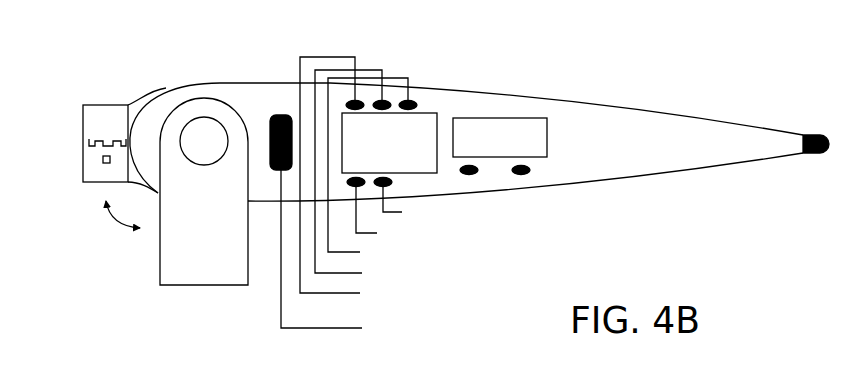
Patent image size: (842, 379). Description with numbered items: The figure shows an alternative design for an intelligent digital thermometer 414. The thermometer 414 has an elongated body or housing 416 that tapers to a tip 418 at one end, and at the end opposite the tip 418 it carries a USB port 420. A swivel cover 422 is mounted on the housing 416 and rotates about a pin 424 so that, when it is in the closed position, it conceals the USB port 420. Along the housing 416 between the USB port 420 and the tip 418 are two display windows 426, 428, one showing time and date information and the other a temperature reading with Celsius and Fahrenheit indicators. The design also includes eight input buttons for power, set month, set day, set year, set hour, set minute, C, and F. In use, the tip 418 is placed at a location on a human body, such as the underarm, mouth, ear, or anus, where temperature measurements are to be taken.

The thermometer 414 is at (445, 187).
The body or housing 416 is at (642, 155).
The tip 418 is at (810, 135).
The USB port 420 is at (120, 105).
The swivel cover 422 is at (222, 278).
The pin 424 is at (210, 117).
The display window 426 is at (512, 117).
The display window 428 is at (438, 114).